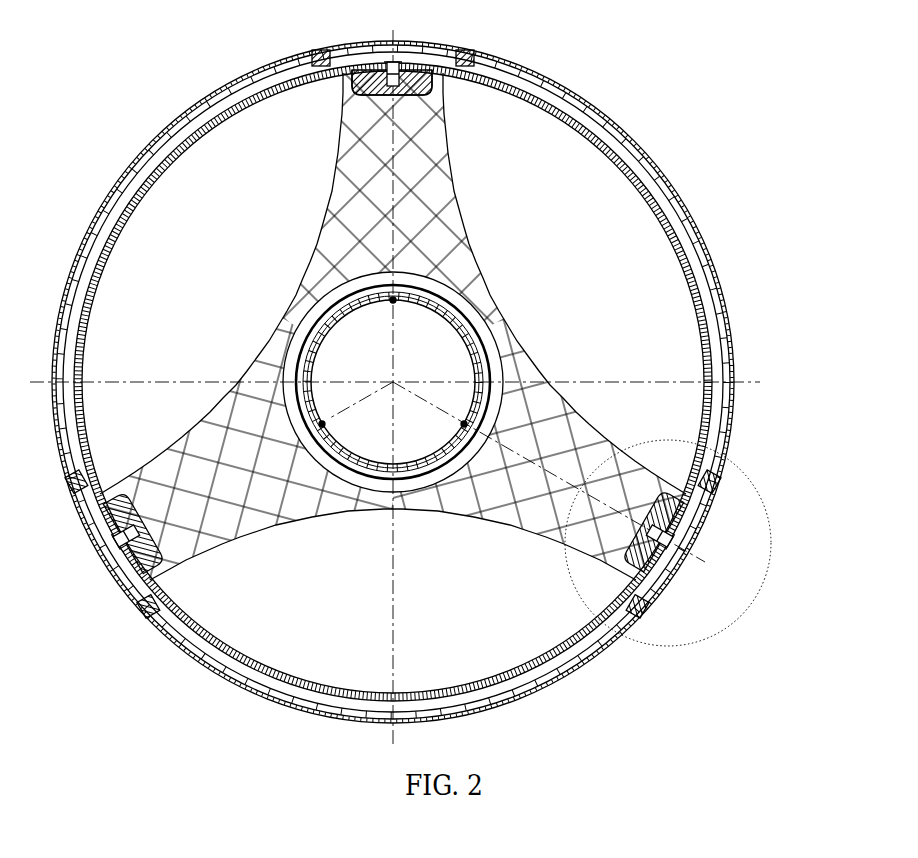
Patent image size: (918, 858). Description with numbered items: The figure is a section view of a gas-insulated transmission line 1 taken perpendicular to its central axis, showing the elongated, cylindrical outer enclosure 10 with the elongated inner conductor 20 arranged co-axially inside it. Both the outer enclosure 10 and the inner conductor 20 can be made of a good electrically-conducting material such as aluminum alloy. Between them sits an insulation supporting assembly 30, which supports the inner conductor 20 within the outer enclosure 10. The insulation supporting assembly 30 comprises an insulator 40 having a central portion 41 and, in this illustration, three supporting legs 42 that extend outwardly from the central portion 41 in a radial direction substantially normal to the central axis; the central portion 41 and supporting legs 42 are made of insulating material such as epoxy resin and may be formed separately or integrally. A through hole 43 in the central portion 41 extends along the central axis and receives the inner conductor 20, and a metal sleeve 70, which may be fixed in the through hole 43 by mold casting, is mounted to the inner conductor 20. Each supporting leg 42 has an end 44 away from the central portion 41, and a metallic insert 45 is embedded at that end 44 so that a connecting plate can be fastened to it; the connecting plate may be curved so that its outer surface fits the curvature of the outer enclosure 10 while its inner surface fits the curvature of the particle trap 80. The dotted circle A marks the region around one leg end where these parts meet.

The gas-insulated transmission line 1 is at (192, 72).
The outer enclosure 10 is at (586, 105).
The particle trap 80 is at (620, 162).
The insulation supporting assembly 30 is at (459, 429).
The insulator 40 is at (393, 326).
The central portion 41 is at (482, 303).
The supporting leg 42 is at (435, 178).
The through hole 43 is at (376, 368).
The end 44 is at (328, 96).
The metallic insert 45 is at (412, 80).
The inner conductor 20 is at (318, 312).
The sleeve 70 is at (490, 368).
The detail region A is at (745, 470).